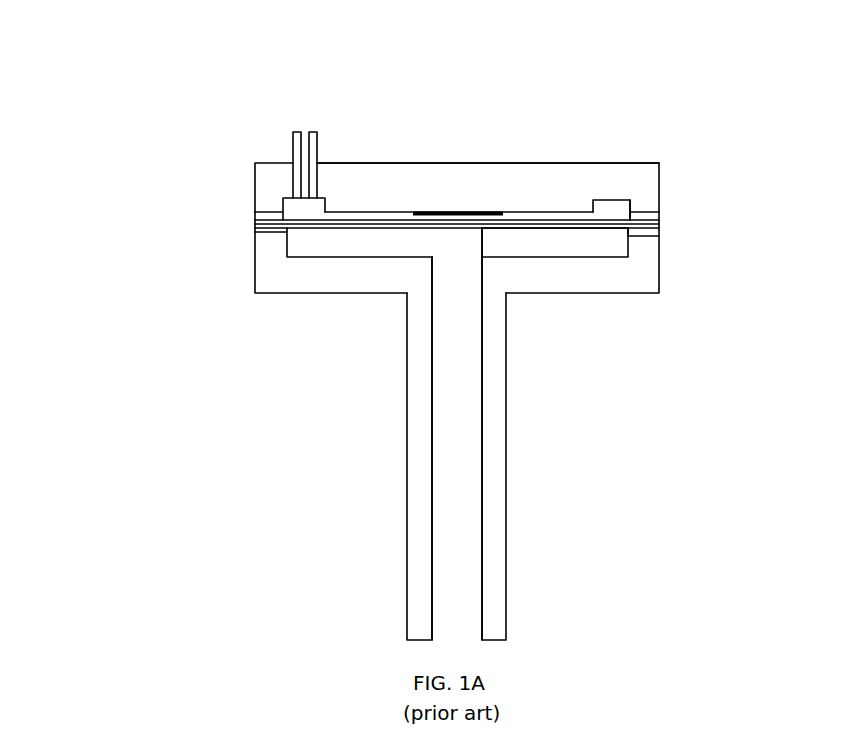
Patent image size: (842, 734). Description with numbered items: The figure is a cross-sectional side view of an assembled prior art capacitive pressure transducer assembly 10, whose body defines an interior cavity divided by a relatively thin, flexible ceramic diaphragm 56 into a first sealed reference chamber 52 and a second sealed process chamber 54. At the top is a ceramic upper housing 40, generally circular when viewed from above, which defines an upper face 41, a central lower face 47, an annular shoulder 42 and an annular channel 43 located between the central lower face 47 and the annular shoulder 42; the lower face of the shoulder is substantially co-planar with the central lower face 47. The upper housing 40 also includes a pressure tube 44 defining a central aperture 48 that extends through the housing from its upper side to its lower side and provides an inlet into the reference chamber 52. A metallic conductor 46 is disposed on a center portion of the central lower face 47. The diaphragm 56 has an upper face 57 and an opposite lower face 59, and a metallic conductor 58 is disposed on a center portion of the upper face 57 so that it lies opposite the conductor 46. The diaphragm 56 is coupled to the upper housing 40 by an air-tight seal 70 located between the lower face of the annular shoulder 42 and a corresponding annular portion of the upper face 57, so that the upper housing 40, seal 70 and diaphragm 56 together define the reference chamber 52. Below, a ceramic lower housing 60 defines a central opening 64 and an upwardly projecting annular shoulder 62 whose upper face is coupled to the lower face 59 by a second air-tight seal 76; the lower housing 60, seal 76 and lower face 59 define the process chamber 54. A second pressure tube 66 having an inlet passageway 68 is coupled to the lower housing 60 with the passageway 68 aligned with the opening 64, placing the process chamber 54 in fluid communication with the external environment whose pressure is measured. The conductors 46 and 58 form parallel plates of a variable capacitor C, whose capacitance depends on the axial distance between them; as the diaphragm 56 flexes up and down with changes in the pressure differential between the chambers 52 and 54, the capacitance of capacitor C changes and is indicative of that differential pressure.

The capacitive pressure transducer assembly 10 is at (152, 80).
The upper housing 40 is at (589, 192).
The upper face 41 is at (447, 163).
The annular shoulder 42 is at (270, 203).
The annular channel 43 is at (622, 207).
The pressure tube 44 is at (297, 143).
The metallic conductor 46 is at (433, 212).
The central lower face 47 is at (523, 210).
The central aperture 48 is at (307, 133).
The reference chamber 52 is at (600, 217).
The process chamber 54 is at (603, 245).
The diaphragm 56 is at (375, 225).
The upper face 57 is at (542, 220).
The metallic conductor 58 is at (485, 228).
The lower face 59 is at (583, 227).
The lower housing 60 is at (577, 287).
The annular shoulder 62 is at (270, 250).
The central opening 64 is at (449, 282).
The pressure tube 66 is at (418, 410).
The inlet passageway 68 is at (453, 528).
The air-tight seal 70 is at (657, 215).
The air-tight seal 76 is at (655, 229).
The variable capacitor C is at (403, 215).